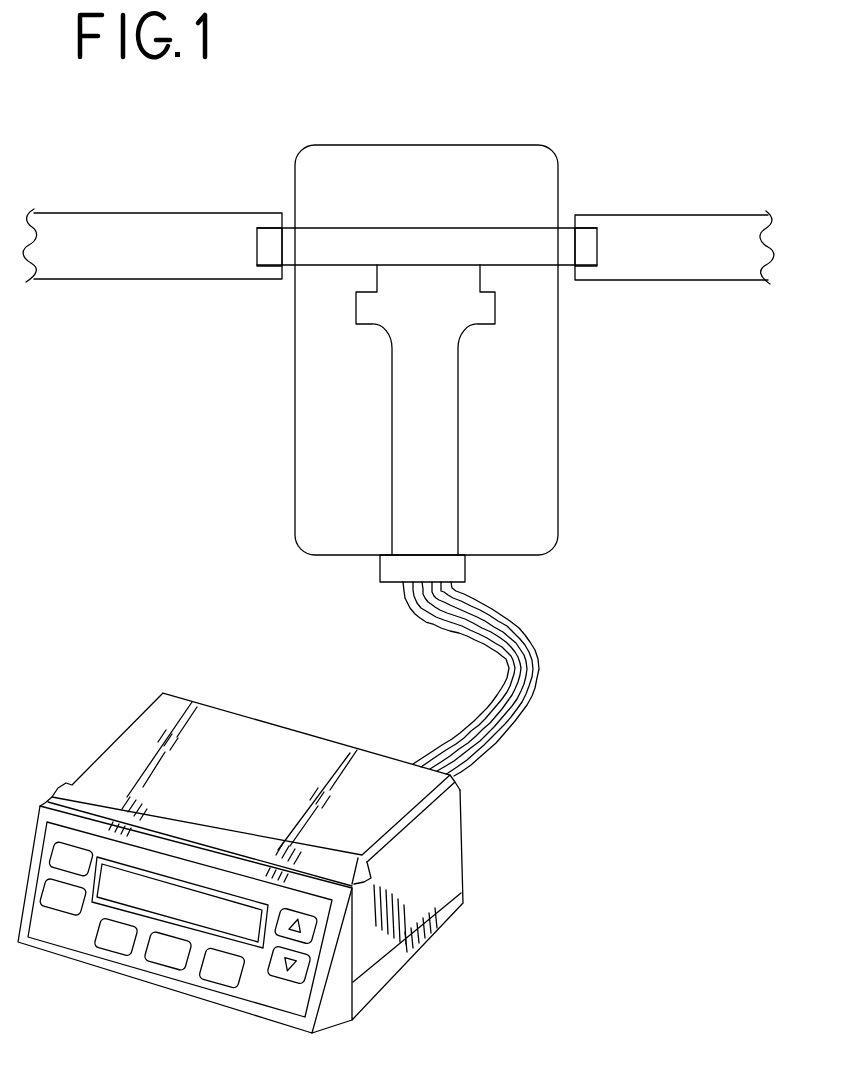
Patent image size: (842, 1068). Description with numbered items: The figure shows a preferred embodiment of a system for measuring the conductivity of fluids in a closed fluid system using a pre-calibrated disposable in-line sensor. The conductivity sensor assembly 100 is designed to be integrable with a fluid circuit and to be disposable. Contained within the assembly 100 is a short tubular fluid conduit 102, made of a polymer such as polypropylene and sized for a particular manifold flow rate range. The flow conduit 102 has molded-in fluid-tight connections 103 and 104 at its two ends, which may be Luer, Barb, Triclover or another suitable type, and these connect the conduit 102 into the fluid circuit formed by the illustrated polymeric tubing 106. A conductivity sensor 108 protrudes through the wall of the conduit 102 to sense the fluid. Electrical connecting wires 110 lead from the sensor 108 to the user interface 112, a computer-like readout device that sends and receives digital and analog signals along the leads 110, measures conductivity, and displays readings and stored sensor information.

The conductivity sensor assembly 100 is at (450, 124).
The fluid conduit 102 is at (387, 228).
The fluid-tight connection 103 is at (267, 266).
The fluid-tight connection 104 is at (588, 266).
The polymeric tubing 106 is at (137, 226).
The conductivity sensor 108 is at (438, 404).
The electrical connecting wires 110 is at (541, 665).
The user interface 112 is at (141, 687).